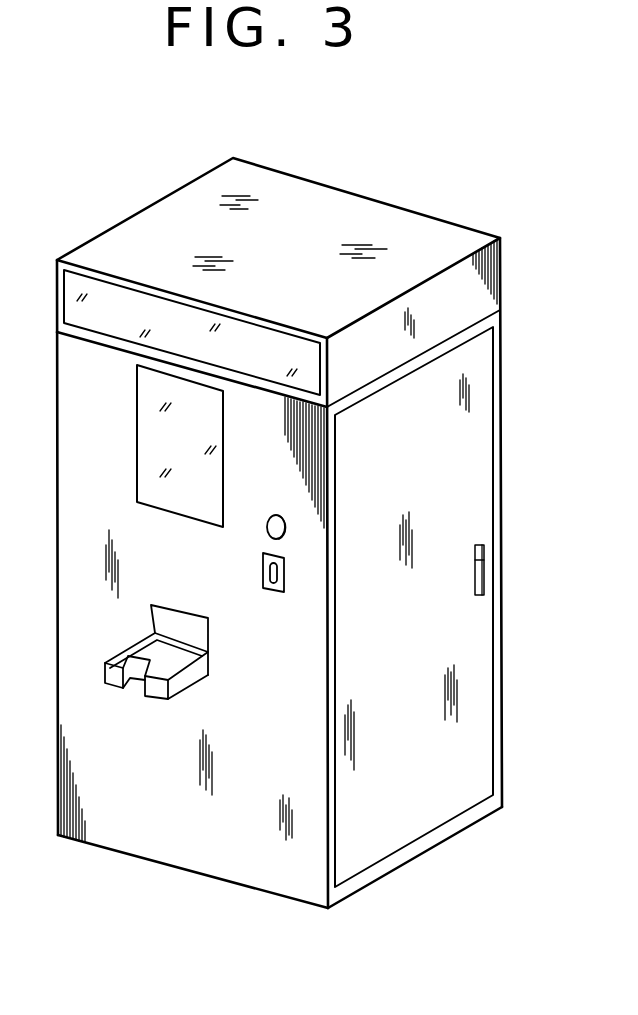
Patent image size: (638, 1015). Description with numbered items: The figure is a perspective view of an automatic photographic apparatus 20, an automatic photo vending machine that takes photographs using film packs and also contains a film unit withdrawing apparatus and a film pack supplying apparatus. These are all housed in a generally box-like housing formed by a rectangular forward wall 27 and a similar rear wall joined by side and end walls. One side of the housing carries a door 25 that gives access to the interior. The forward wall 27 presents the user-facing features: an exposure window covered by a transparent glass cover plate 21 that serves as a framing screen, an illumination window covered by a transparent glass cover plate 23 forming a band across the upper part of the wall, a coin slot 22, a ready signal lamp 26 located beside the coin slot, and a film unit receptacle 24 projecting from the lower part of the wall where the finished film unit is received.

The automatic photographic apparatus 20 is at (410, 203).
The transparent glass cover plate 21 is at (205, 483).
The coin slot 22 is at (287, 577).
The transparent glass cover plate 23 is at (118, 318).
The film unit receptacle 24 is at (163, 663).
The door 25 is at (462, 430).
The ready signal lamp 26 is at (267, 533).
The forward wall 27 is at (148, 833).